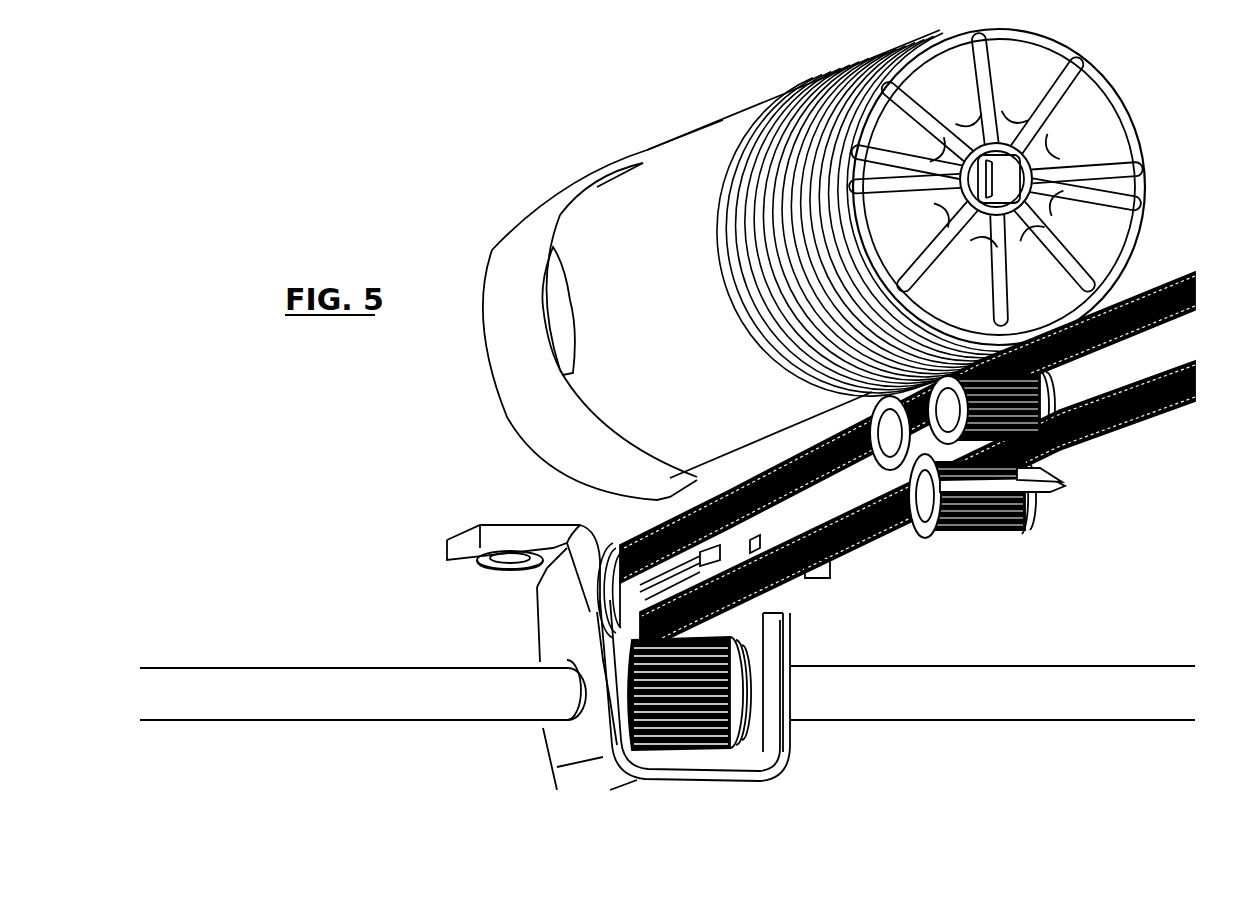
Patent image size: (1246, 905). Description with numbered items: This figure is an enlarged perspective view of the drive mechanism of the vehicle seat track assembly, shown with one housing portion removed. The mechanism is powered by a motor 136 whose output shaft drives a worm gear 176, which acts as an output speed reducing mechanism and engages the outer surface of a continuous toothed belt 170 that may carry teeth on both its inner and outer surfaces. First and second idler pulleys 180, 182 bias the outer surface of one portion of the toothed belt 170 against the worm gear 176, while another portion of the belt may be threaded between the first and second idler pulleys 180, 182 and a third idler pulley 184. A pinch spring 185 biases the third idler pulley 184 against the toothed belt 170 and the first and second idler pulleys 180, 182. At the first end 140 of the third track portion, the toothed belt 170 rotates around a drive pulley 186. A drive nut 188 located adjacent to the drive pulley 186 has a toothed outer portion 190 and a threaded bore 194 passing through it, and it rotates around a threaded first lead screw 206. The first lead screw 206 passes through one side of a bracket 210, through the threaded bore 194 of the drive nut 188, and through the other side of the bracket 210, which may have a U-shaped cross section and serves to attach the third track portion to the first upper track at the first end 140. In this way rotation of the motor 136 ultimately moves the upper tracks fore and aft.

The motor 136 is at (711, 265).
The worm gear 176 is at (816, 72).
The first end 140 is at (473, 463).
The toothed belt 170 is at (1133, 420).
The first idler pulley 180 is at (877, 572).
The second idler pulley 182 is at (1046, 384).
The third idler pulley 184 is at (1030, 522).
The pinch spring 185 is at (1068, 487).
The drive pulley 186 is at (619, 534).
The drive nut 188 is at (750, 668).
The toothed outer portion 190 is at (740, 727).
The threaded bore 194 is at (578, 702).
The first lead screw 206 is at (1010, 665).
The bracket 210 is at (540, 650).